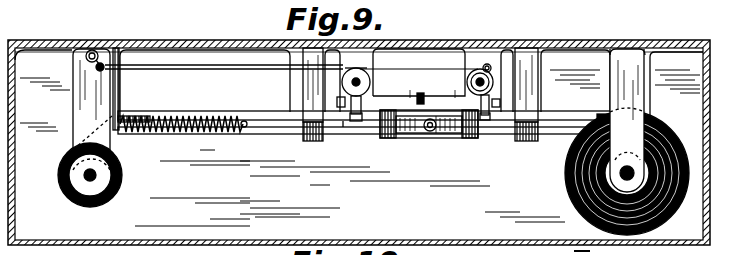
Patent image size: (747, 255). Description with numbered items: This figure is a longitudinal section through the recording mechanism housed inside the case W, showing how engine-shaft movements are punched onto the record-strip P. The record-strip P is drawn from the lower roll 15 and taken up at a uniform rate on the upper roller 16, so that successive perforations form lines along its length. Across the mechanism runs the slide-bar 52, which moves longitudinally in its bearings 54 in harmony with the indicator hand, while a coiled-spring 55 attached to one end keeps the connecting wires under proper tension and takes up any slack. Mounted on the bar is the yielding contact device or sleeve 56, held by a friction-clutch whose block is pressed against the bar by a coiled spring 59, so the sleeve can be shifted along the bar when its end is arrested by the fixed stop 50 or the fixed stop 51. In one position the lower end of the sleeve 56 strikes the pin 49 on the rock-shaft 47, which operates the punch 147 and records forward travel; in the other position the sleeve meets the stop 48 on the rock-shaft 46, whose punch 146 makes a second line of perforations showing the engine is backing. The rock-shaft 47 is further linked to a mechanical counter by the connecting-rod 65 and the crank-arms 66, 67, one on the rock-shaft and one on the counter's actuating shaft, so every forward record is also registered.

The case W is at (420, 240).
The record-strip P is at (260, 112).
The lower roll 15 is at (667, 133).
The upper roller 16 is at (73, 175).
The rock-shaft 46 is at (360, 79).
The rock-shaft 47 is at (477, 74).
The stop 48 is at (358, 118).
The pin 49 is at (483, 114).
The fixed stop 50 is at (337, 100).
The fixed stop 51 is at (500, 104).
The slide-bar 52 is at (342, 127).
The bearings 54 is at (417, 103).
The coiled-spring 55 is at (160, 128).
The contact device 56 is at (433, 144).
The coiled spring 59 is at (451, 138).
The connecting-rod 65 is at (236, 66).
The crank-arm 66 is at (493, 68).
The crank-arm 67 is at (86, 58).
The punch 146 is at (392, 88).
The punch 147 is at (437, 92).